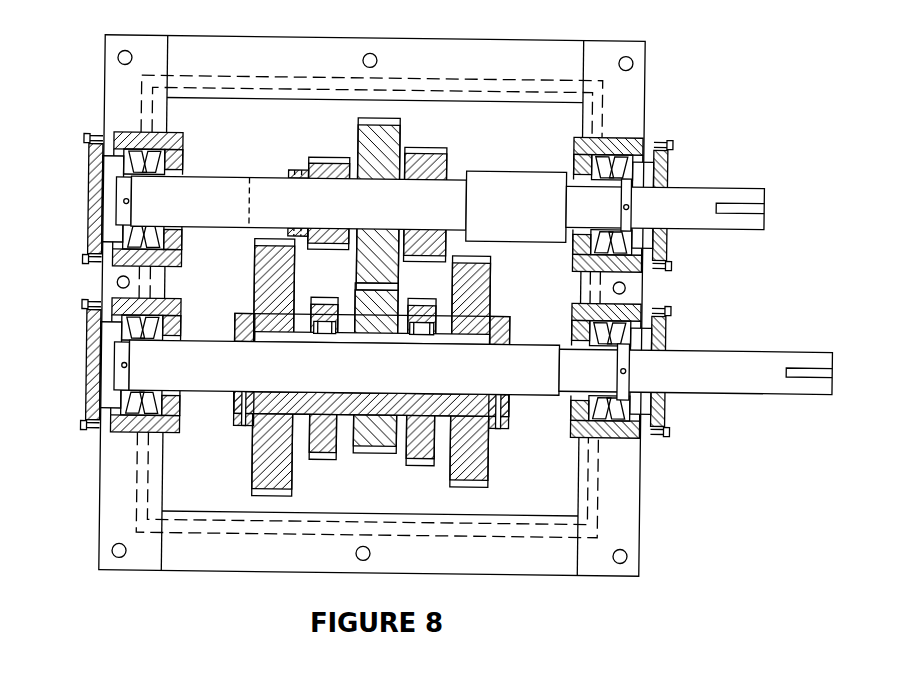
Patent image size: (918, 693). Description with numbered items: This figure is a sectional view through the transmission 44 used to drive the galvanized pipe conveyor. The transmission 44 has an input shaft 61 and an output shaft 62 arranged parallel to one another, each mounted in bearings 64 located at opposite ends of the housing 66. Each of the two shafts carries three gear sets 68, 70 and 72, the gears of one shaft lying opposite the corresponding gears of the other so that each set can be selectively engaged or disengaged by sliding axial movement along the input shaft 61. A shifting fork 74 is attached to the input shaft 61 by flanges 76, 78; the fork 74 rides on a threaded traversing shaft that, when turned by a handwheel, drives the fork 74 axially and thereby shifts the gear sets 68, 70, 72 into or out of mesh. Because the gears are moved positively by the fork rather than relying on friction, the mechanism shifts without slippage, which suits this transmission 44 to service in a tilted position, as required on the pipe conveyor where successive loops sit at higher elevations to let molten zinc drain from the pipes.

The transmission 44 is at (400, 306).
The housing 66 is at (342, 307).
The bearings 64 is at (376, 285).
The gear set 68 is at (279, 313).
The gear set 70 is at (376, 278).
The gear set 72 is at (470, 314).
The shifting fork 74 is at (373, 402).
The flange 76 is at (335, 349).
The flange 78 is at (431, 350).
The output shaft 62 is at (440, 196).
The input shaft 61 is at (473, 355).